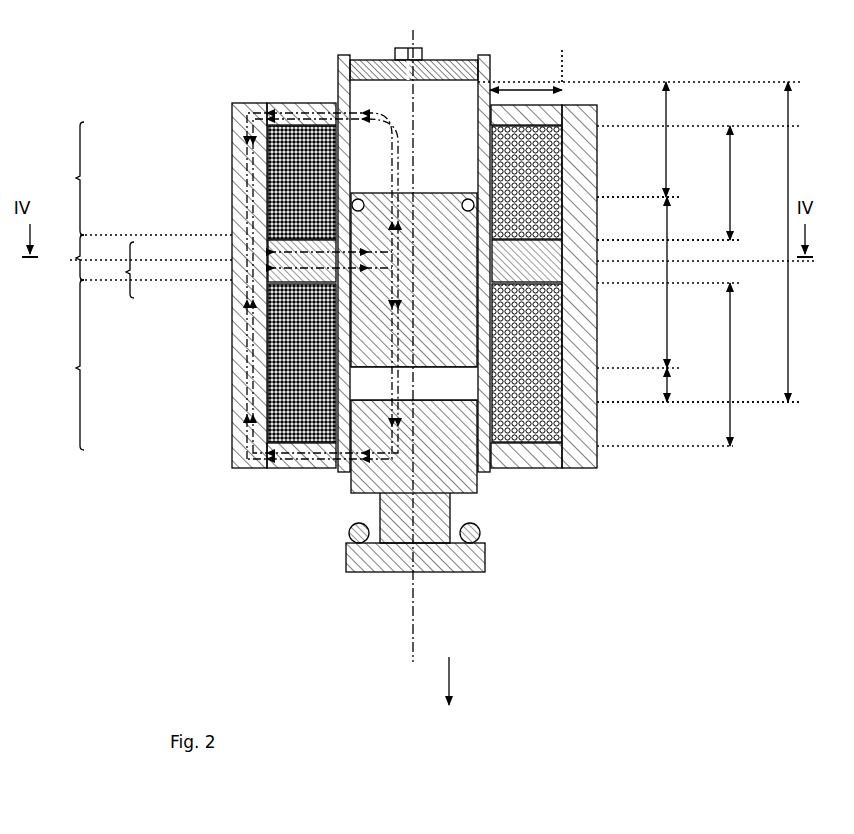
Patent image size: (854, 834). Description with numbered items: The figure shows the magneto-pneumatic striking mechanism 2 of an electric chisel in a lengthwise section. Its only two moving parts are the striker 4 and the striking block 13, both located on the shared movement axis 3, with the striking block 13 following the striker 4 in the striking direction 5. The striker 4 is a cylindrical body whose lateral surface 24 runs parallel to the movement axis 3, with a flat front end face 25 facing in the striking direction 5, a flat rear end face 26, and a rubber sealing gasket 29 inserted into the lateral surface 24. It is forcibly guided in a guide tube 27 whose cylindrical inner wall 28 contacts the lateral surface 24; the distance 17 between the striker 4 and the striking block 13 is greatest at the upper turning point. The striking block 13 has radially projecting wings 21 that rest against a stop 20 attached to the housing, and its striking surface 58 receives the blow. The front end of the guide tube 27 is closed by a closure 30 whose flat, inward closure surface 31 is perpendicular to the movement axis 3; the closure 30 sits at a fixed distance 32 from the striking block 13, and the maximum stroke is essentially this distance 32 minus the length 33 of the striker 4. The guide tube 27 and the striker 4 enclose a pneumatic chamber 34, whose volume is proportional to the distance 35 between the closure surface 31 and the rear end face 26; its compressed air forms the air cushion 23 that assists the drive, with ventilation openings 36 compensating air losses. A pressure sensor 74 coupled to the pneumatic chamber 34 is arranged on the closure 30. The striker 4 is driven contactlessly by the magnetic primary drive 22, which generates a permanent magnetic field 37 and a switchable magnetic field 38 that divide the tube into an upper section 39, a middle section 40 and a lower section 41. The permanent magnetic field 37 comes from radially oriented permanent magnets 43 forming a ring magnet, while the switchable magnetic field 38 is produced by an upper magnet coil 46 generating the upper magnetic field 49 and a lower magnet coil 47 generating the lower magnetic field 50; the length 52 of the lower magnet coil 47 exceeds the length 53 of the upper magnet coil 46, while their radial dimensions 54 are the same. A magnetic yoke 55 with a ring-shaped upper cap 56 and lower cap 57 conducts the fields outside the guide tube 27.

The striking mechanism 2 is at (115, 50).
The movement axis 3 is at (417, 640).
The striker 4 is at (437, 302).
The striking direction 5 is at (453, 677).
The striking block 13 is at (480, 485).
The distance 17 is at (667, 385).
The stop 20 is at (480, 530).
The radially projecting wings 21 is at (477, 558).
The primary drive 22 is at (134, 133).
The air cushion 23 is at (343, 55).
The lateral surface 24 is at (485, 230).
The front end face 25 is at (435, 378).
The rear end face 26 is at (427, 193).
The guide tube 27 is at (563, 415).
The inner wall 28 is at (458, 193).
The sealing gasket 29 is at (562, 240).
The closure 30 is at (437, 65).
The closure surface 31 is at (562, 90).
The distance 32 is at (788, 120).
The length 33 is at (667, 275).
The pneumatic chamber 34 is at (423, 145).
The distance 35 is at (666, 115).
The ventilation opening 36 is at (322, 108).
The permanent magnetic field 37 is at (240, 371).
The switchable magnetic field 38 is at (107, 270).
The upper section 39 is at (62, 178).
The middle section 40 is at (62, 257).
The lower section 41 is at (62, 365).
The permanent magnets 43 is at (250, 222).
The upper magnet coil 46 is at (232, 160).
The lower magnet coil 47 is at (263, 250).
The upper magnetic field 49 is at (233, 217).
The lower magnetic field 50 is at (232, 298).
The length 52 is at (730, 360).
The length 53 is at (730, 175).
The radial dimensions 54 is at (540, 90).
The magnetic yoke 55 is at (232, 410).
The upper cap 56 is at (292, 107).
The lower cap 57 is at (300, 467).
The striking surface 58 is at (480, 392).
The pressure sensor 74 is at (403, 53).